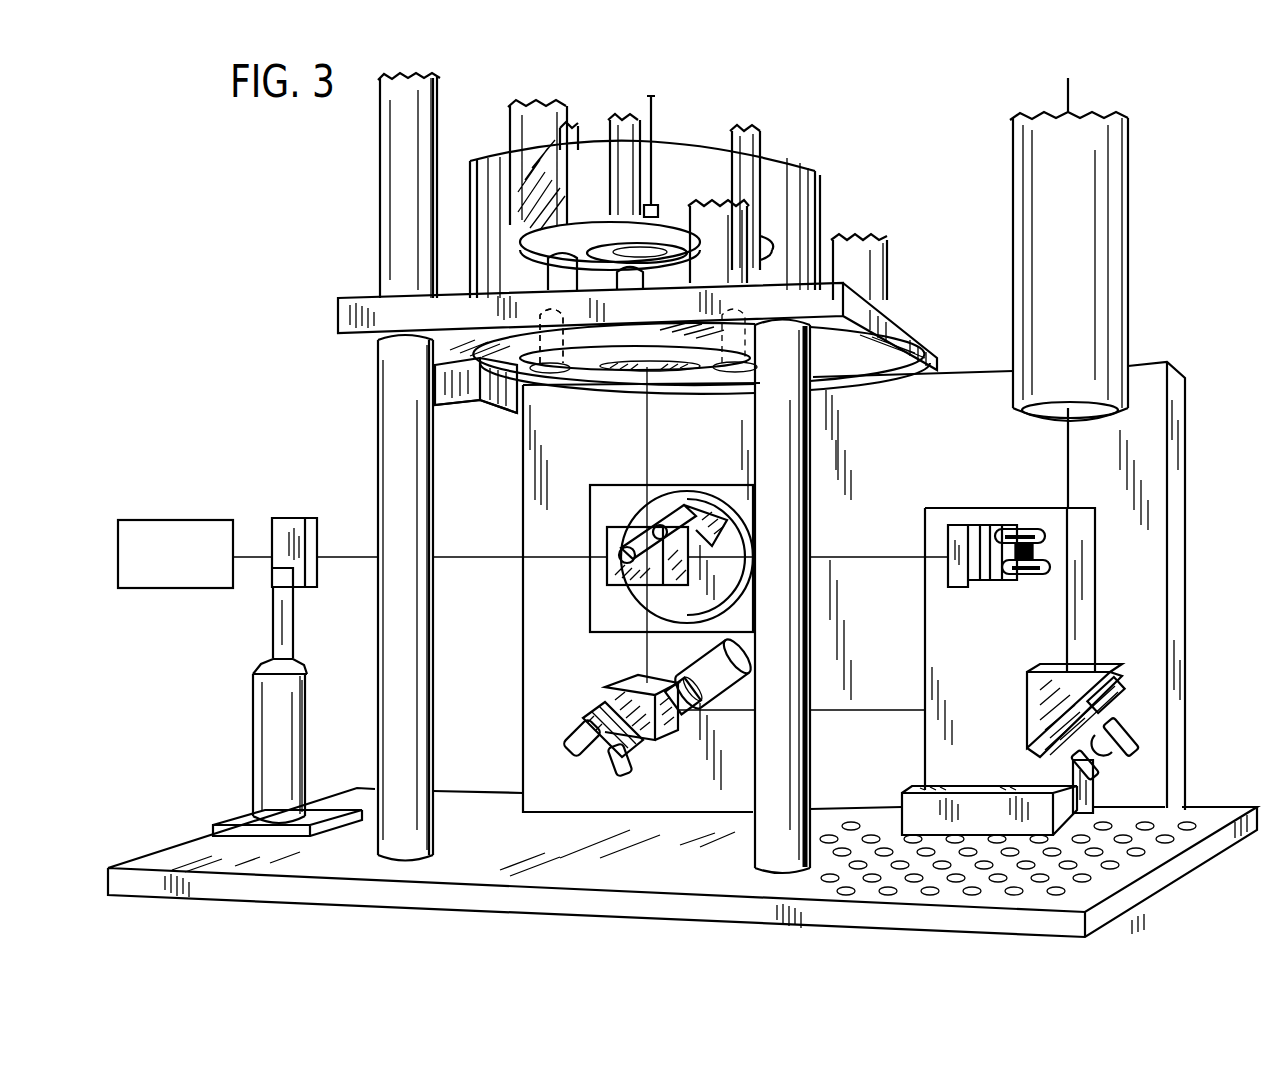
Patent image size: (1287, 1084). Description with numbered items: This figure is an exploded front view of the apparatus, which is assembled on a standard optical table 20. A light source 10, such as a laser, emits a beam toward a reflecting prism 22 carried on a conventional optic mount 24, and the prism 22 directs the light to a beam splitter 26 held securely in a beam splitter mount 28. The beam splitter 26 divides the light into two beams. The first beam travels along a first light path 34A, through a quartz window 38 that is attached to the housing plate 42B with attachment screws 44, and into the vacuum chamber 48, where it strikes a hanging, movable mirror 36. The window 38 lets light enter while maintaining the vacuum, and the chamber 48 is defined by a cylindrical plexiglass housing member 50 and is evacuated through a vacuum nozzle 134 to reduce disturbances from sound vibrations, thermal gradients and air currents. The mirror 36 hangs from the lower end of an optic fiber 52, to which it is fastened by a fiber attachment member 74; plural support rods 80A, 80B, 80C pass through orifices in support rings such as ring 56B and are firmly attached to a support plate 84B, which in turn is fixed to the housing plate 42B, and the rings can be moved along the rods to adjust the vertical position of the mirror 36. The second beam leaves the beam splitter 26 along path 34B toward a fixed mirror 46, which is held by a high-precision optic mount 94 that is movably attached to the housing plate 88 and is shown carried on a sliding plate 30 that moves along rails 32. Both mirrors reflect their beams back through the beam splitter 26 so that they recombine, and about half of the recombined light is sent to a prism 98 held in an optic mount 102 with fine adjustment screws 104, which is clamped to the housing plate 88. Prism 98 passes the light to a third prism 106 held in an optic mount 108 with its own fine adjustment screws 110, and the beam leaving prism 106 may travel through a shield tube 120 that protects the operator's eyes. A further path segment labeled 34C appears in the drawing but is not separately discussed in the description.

The light source 10 is at (176, 590).
The optical table 20 is at (192, 843).
The reflecting prism 22 is at (292, 530).
The optic mount 24 is at (257, 713).
The beam splitter 26 is at (605, 572).
The beam splitter mount 28 is at (673, 497).
The plate 30 is at (1040, 508).
The rails 32 is at (965, 790).
The first light path 34A is at (647, 422).
The second light path 34B is at (873, 566).
The lower beam path 34C is at (870, 712).
The hanging movable mirror 36 is at (605, 272).
The quartz window 38 is at (745, 383).
The housing plate 42B is at (338, 315).
The attachment screws 44 is at (480, 388).
The fixed mirror 46 is at (948, 538).
The vacuum chamber 48 is at (820, 200).
The cylindrical plexiglass housing member 50 is at (473, 221).
The optic fiber 52 is at (653, 152).
The support ring 56B is at (523, 248).
The fiber attachment member 74 is at (660, 206).
The support rod 80A is at (550, 185).
The support rod 80B is at (760, 180).
The support rod 80C is at (586, 140).
The support plate 84B is at (470, 361).
The housing plate 88 is at (1177, 527).
The high precision optic mount 94 is at (1033, 553).
The prism 98 is at (630, 680).
The high-precision optic mount 102 is at (592, 717).
The fine adjustment screws 104 is at (563, 747).
The third prism 106 is at (1040, 678).
The high precision optic mount 108 is at (1113, 700).
The fine adjustment screws 110 is at (1093, 767).
The shield tube 120 is at (1108, 260).
The vacuum nozzle 134 is at (458, 408).